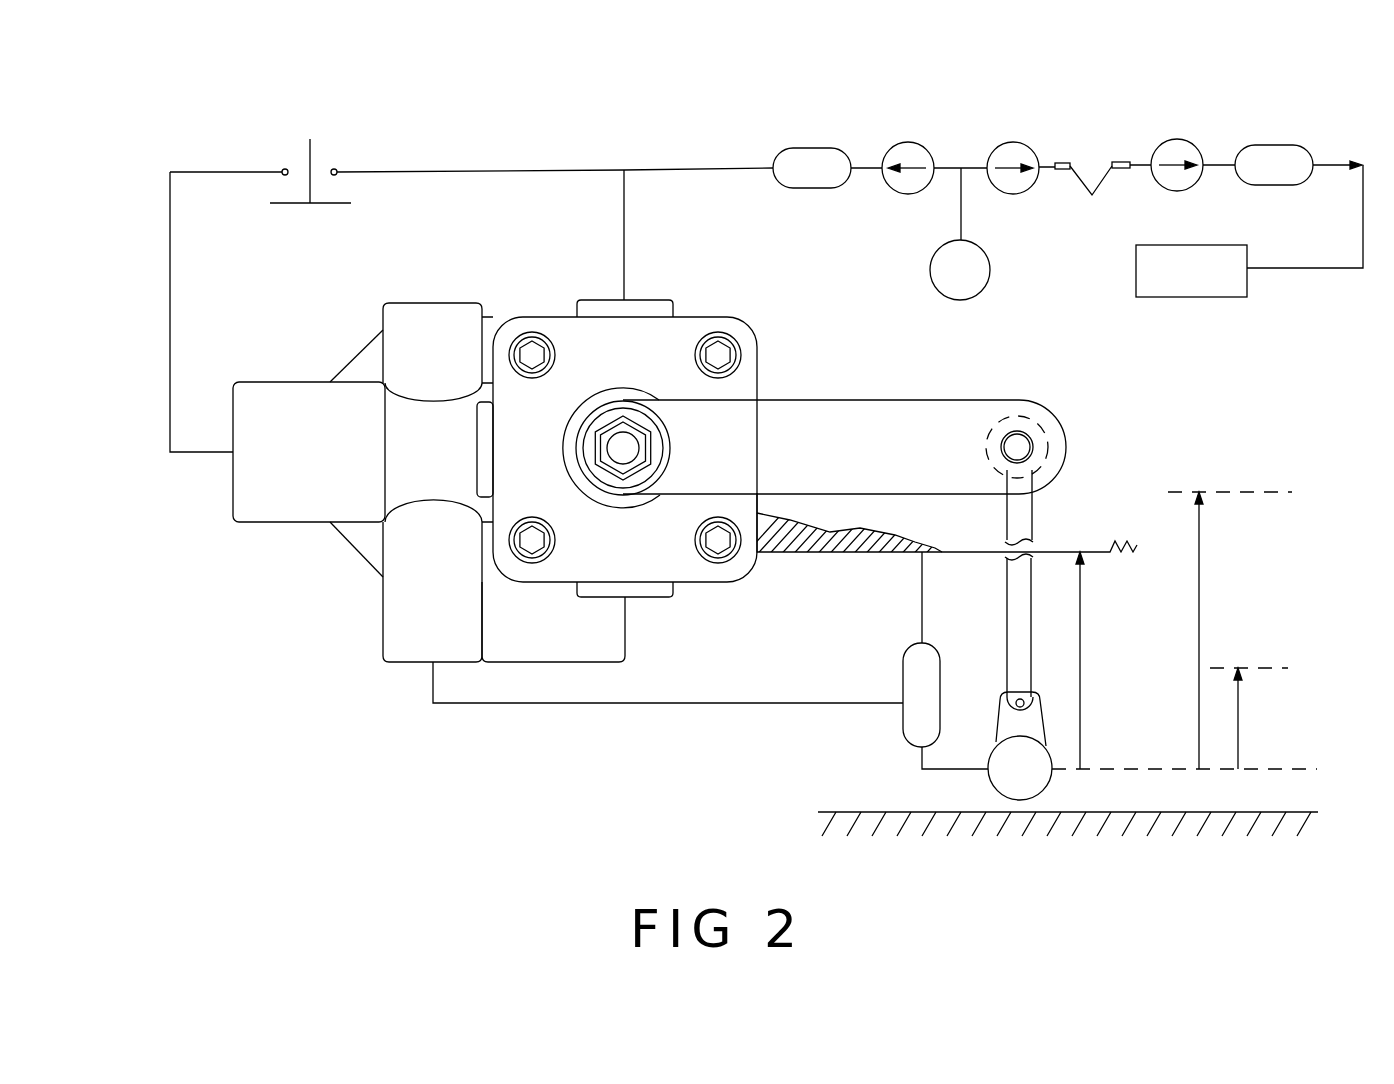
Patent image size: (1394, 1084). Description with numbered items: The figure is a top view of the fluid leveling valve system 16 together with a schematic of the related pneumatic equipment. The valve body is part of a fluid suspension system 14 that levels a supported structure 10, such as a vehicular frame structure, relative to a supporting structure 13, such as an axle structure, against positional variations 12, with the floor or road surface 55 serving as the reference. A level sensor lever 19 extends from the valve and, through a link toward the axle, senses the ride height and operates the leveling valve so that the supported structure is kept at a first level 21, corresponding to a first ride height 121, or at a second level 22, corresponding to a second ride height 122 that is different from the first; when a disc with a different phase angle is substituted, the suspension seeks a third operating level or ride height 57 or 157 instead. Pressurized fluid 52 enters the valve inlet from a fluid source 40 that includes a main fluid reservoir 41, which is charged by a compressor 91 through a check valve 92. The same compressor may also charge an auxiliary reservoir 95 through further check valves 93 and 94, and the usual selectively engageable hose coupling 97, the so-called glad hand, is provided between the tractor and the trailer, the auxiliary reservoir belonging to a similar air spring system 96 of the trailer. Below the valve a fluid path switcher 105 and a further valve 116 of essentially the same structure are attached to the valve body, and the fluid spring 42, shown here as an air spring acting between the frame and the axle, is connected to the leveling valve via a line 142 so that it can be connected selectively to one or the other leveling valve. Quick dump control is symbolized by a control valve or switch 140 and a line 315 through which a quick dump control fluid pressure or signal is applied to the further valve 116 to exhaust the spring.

The line 315 is at (223, 171).
The control valve or switch 140 is at (310, 160).
The fluid source 40 is at (958, 203).
The pressurized fluid 52 is at (628, 280).
The fluid reservoir 41 is at (807, 148).
The check valve 92 is at (903, 143).
The check valve 93 is at (1008, 143).
The hose coupling 97 is at (1077, 177).
The check valve 94 is at (1167, 140).
The auxiliary reservoir 95 is at (1270, 145).
The air spring system 96 is at (1190, 297).
The compressor 91 is at (970, 300).
The fluid suspension system 14 is at (764, 391).
The fluid leveling valve system 16 is at (495, 559).
The fluid path switcher 105 is at (381, 619).
The further valve 116 is at (342, 467).
The level sensor lever 19 is at (923, 458).
The first level 21 is at (1050, 552).
The positional variations 12 is at (1136, 543).
The supported structure 10 is at (825, 553).
The supporting structure 13 is at (1006, 782).
The fluid spring 42 is at (938, 710).
The line 142 is at (717, 705).
The floor or road surface 55 is at (850, 812).
The first ride height 121 is at (1082, 655).
The second level 22 is at (1220, 487).
The second ride height 122 is at (1200, 733).
The third operating level or ride height 57 is at (1247, 668).
The third operating level or ride height 157 is at (1242, 733).